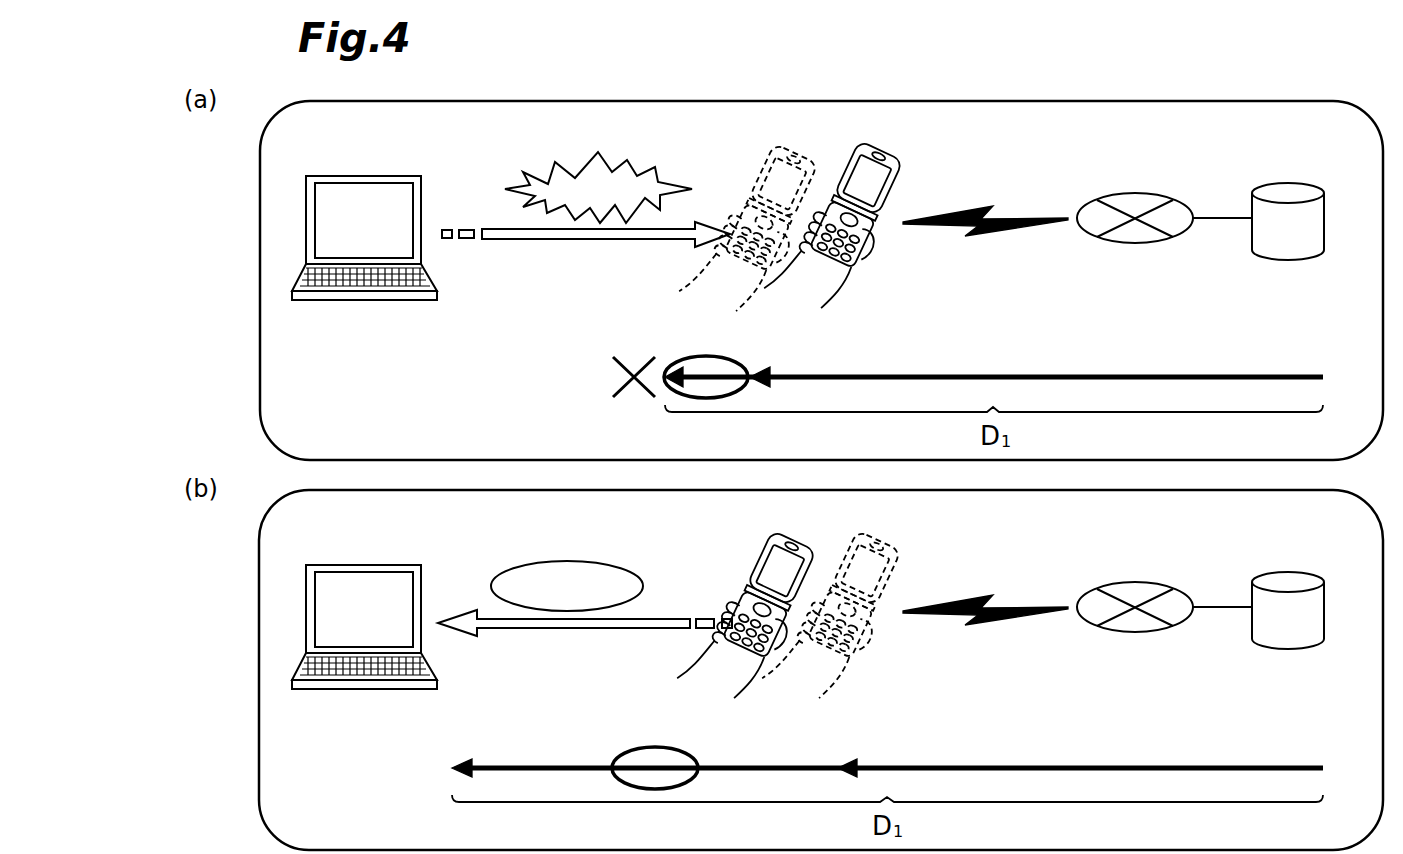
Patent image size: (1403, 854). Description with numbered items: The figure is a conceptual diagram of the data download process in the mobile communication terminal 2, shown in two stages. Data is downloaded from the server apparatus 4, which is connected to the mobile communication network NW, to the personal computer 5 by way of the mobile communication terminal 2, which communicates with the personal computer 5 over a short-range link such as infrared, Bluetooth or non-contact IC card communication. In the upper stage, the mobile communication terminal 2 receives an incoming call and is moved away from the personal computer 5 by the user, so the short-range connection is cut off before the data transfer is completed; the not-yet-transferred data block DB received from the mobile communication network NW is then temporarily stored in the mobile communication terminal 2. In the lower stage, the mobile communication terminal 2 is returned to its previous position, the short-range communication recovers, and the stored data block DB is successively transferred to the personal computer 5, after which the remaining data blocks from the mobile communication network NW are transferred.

The mobile communication terminal 2 is at (887, 158).
The server apparatus 4 is at (1300, 184).
The personal computer 5 is at (396, 176).
The mobile communication network NW is at (1140, 193).
The not-yet-transferred data block DB is at (707, 357).